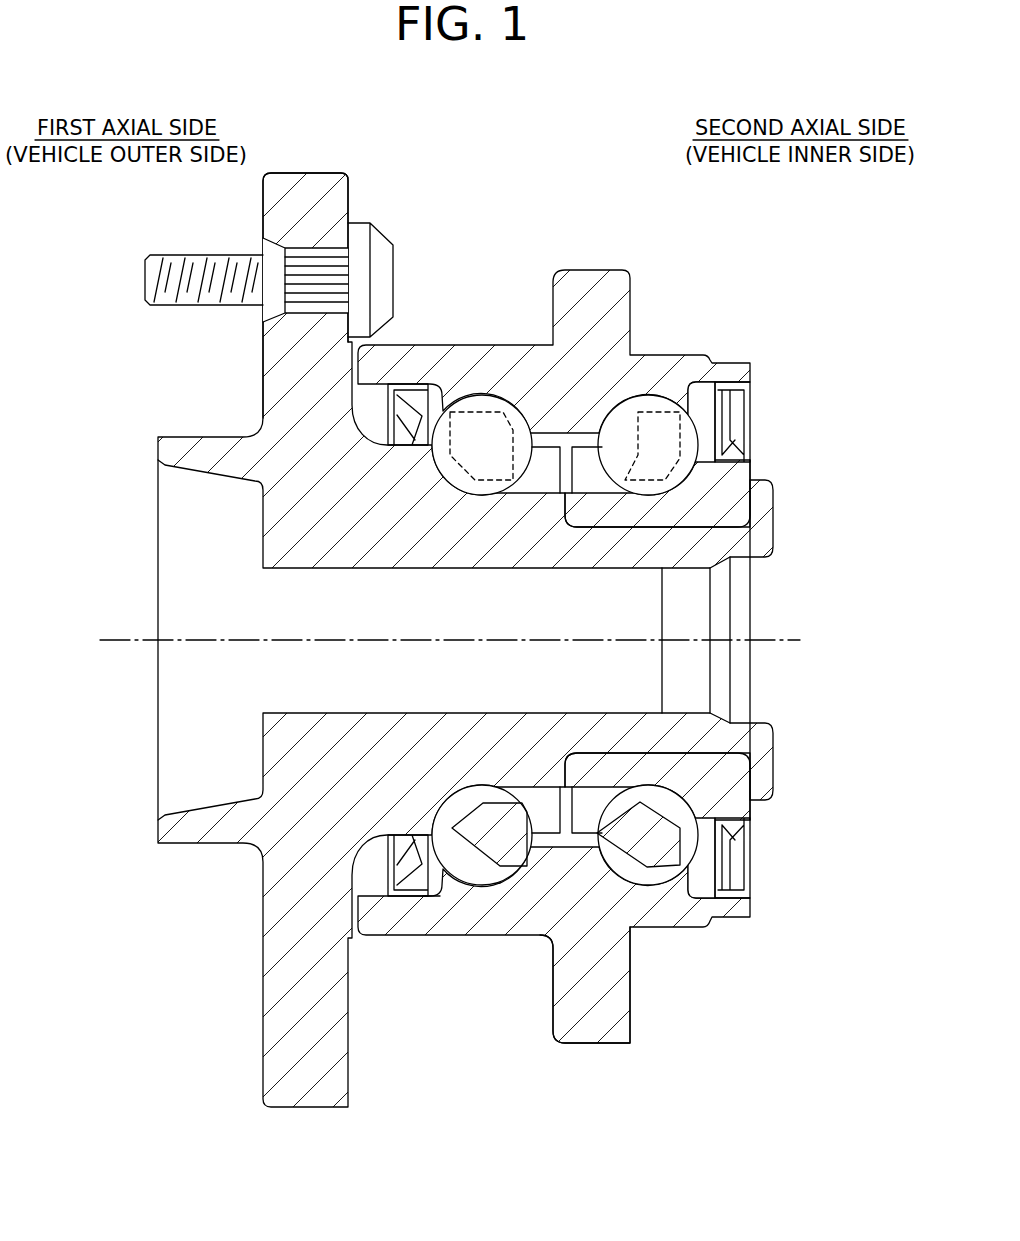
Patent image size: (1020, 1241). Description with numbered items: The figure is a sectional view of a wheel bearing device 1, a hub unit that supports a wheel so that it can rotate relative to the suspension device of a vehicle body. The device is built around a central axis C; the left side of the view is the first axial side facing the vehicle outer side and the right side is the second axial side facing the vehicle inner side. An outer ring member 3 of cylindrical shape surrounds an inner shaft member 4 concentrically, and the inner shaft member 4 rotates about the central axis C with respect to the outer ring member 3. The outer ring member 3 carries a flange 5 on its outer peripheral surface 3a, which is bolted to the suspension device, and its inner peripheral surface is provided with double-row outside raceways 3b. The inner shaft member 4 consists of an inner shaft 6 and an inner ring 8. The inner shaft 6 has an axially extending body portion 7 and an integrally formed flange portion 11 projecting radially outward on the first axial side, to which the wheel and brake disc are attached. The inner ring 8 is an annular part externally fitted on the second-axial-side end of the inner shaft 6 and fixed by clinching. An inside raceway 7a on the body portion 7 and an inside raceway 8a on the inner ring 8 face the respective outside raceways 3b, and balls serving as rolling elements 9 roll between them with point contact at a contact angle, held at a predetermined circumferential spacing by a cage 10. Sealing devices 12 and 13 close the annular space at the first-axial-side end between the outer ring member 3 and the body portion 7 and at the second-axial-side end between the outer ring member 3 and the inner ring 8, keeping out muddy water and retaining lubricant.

The wheel bearing device 1 is at (465, 626).
The outer ring member 3 is at (554, 680).
The outer peripheral surface 3a is at (425, 920).
The outside raceways 3b is at (490, 880).
The inner shaft member 4 is at (431, 640).
The flange 5 is at (597, 1043).
The inner shaft 6 is at (250, 509).
The body portion 7 is at (534, 548).
The inside raceway 7a is at (470, 795).
The inner ring 8 is at (691, 640).
The inside raceway 8a is at (645, 805).
The rolling elements 9 is at (487, 412).
The cage 10 is at (505, 410).
The flange portion 11 is at (285, 207).
The sealing device 12 is at (363, 406).
The sealing device 13 is at (769, 378).
The central axis C is at (778, 650).